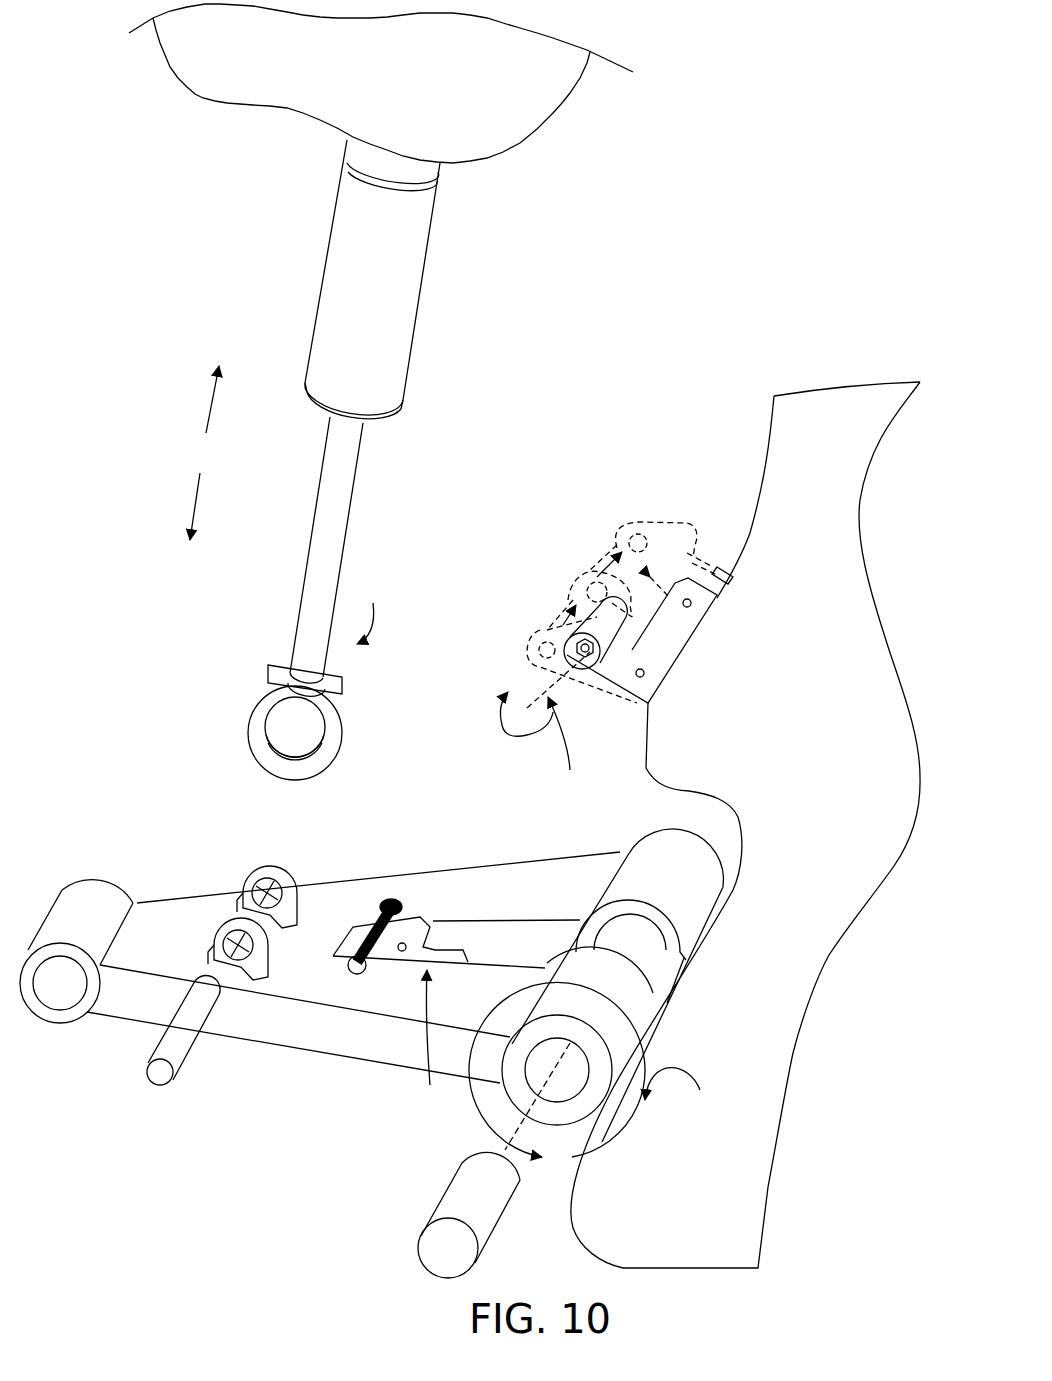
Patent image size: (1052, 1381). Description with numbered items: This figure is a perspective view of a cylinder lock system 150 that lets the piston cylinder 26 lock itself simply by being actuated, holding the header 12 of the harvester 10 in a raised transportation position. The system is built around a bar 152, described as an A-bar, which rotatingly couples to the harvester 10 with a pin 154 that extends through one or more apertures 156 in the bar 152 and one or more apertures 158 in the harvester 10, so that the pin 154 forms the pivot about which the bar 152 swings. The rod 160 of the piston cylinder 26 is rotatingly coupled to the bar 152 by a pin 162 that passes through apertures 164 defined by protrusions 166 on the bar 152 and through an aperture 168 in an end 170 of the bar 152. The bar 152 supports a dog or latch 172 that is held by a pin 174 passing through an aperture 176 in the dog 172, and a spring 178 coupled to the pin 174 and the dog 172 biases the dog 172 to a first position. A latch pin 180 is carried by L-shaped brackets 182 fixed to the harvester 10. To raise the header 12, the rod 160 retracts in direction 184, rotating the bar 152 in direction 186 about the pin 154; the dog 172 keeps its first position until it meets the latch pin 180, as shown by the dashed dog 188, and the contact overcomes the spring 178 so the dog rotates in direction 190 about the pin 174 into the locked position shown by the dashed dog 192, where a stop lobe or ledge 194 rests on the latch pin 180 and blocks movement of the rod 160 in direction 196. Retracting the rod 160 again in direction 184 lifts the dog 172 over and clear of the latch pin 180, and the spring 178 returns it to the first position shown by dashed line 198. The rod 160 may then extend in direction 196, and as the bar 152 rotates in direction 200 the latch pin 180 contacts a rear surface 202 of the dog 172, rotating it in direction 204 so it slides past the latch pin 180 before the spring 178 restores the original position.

The harvester 10 is at (834, 807).
The header 12 is at (345, 77).
The piston cylinder 26 is at (140, 322).
The cylinder lock system 150 is at (767, 76).
The bar 152 is at (378, 1047).
The pin 154 is at (443, 1215).
The apertures 156 is at (570, 1100).
The apertures 158 is at (640, 943).
The rod 160 is at (308, 606).
The pin 162 is at (183, 1058).
The apertures 164 is at (293, 912).
The protrusions 166 is at (250, 892).
The aperture 168 is at (283, 752).
The end 170 is at (373, 608).
The dog or latch 172 is at (400, 1017).
The pin 174 is at (353, 970).
The aperture 176 is at (367, 950).
The spring 178 is at (368, 960).
The latch pin 180 is at (590, 666).
The brackets 182 is at (725, 562).
The direction 184 is at (212, 400).
The direction 186 is at (682, 1095).
The dashed dog 188 is at (530, 640).
The direction 190 is at (502, 725).
The dashed dog 192 is at (575, 592).
The stop lobe or ledge 194 is at (427, 920).
The direction 196 is at (193, 500).
The dashed line 198 is at (655, 520).
The direction 200 is at (478, 1108).
The rear surface 202 is at (633, 627).
The direction 204 is at (568, 749).